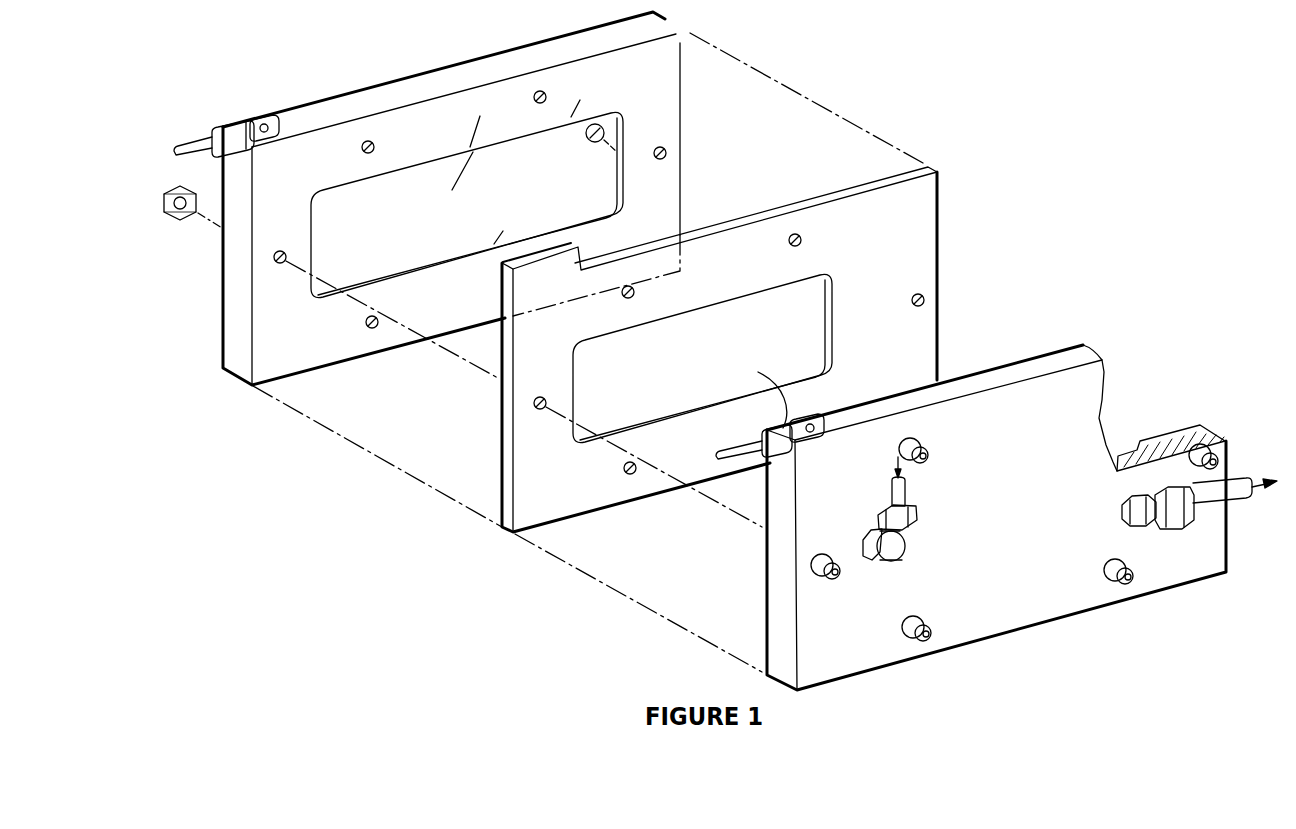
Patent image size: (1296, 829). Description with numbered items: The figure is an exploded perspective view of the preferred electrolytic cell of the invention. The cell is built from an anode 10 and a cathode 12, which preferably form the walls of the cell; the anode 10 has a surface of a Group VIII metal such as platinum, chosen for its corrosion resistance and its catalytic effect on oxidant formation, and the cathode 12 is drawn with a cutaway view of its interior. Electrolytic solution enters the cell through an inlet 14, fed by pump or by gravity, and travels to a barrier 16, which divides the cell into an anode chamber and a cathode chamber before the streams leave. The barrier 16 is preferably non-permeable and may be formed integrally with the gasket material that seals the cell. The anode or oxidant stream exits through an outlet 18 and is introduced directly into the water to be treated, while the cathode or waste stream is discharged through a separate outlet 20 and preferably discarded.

The anode 10 is at (347, 100).
The cathode 12 is at (1052, 612).
The inlet 14 is at (892, 563).
The barrier 16 is at (829, 345).
The outlet 18 is at (604, 135).
The outlet 20 is at (1238, 497).